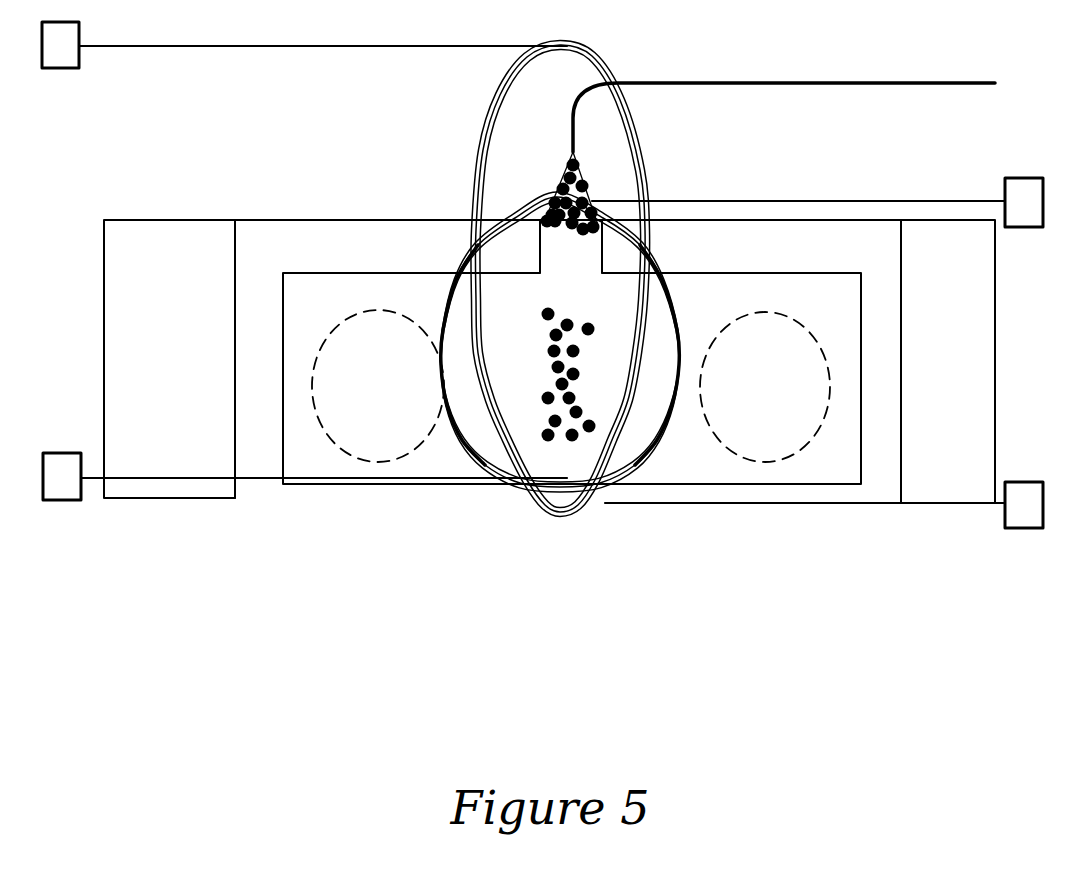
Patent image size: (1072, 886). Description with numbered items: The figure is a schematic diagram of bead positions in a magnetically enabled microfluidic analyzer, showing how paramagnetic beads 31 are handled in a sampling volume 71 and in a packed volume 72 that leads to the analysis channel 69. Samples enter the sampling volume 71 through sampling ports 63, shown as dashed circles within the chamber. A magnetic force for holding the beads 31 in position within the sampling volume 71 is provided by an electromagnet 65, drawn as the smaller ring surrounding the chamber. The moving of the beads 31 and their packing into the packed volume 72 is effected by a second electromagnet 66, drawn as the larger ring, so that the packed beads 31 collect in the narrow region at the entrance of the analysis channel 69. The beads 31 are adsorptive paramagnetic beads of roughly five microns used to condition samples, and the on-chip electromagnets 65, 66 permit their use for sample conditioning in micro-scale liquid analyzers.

The beads 31 is at (592, 188).
The sampling ports 63 is at (335, 333).
The electromagnet 65 is at (648, 465).
The electromagnet 66 is at (487, 138).
The analysis channel 69 is at (805, 83).
The sampling volume 71 is at (618, 318).
The packed volume 72 is at (553, 252).